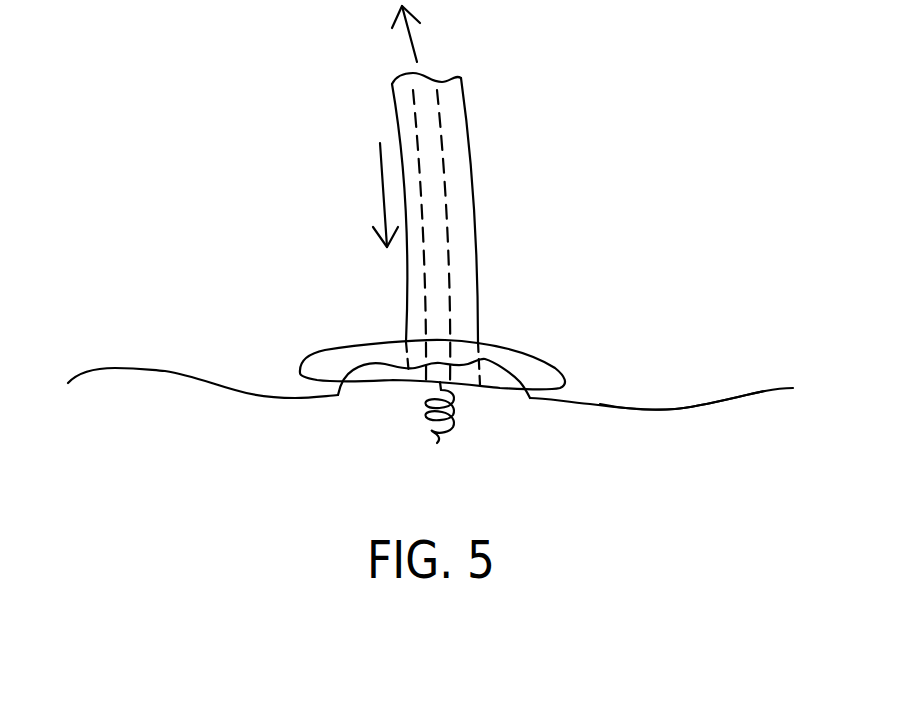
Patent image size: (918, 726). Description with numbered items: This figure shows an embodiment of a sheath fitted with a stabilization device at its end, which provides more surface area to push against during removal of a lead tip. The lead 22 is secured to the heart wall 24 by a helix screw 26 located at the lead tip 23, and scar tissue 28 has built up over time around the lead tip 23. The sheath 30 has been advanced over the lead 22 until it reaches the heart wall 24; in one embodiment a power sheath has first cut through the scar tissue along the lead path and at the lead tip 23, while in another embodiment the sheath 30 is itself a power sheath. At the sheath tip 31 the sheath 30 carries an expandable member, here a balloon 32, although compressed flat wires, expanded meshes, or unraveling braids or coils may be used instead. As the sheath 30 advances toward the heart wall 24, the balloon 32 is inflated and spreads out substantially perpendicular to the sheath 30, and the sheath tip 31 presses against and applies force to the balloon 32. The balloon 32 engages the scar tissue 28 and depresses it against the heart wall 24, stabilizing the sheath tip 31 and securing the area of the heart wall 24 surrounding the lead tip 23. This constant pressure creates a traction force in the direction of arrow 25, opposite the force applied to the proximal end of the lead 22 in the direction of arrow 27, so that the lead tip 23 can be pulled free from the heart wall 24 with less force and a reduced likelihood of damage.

The lead 22 is at (440, 134).
The lead tip 23 is at (428, 375).
The heart wall 24 is at (663, 410).
The arrow 25 is at (382, 188).
The helix screw 26 is at (437, 443).
The arrow 27 is at (415, 40).
The scar tissue 28 is at (548, 388).
The sheath 30 is at (471, 213).
The sheath tip 31 is at (463, 382).
The balloon 32 is at (510, 342).